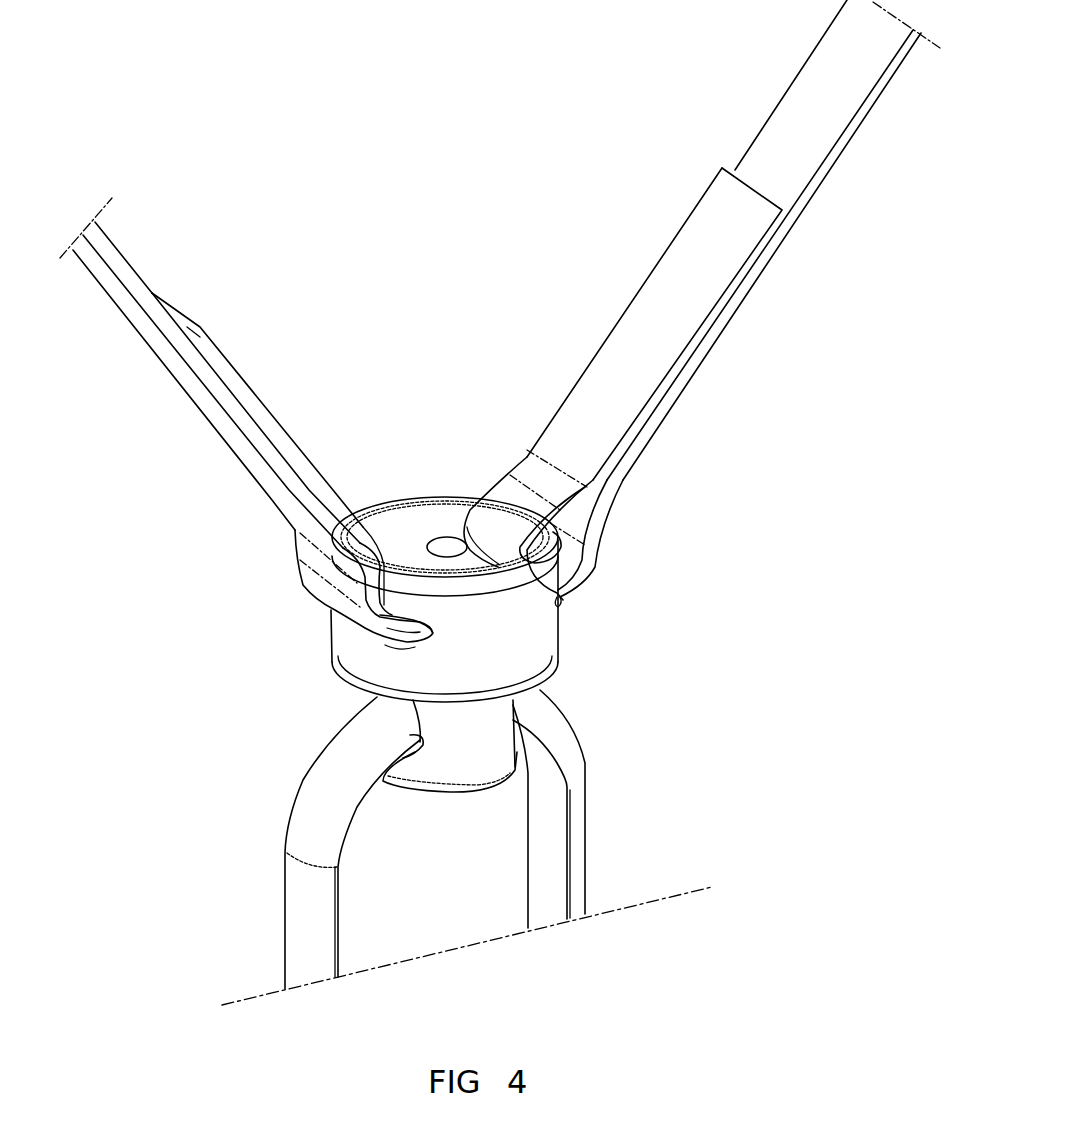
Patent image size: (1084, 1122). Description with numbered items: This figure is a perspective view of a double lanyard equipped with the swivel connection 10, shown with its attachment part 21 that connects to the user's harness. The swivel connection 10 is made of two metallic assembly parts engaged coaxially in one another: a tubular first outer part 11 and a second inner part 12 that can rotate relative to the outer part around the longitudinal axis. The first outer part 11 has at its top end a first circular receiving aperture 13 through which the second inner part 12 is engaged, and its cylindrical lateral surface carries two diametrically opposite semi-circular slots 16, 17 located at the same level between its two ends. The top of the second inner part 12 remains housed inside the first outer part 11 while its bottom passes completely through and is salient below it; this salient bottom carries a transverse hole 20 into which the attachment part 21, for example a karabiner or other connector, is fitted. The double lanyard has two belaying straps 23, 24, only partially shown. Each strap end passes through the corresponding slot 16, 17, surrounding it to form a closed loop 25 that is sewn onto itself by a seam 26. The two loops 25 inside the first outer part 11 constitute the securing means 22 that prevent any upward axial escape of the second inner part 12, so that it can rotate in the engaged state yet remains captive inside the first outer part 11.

The swivel connection 10 is at (260, 657).
The first outer part 11 is at (535, 662).
The second inner part 12 is at (486, 751).
The first circular receiving aperture 13 is at (428, 515).
The semi-circular slot 16 is at (403, 648).
The semi-circular slot 17 is at (457, 540).
The transverse hole 20 is at (413, 755).
The attachment part 21 is at (313, 905).
The securing means 22 is at (252, 583).
The belaying strap 23 is at (128, 270).
The belaying strap 24 is at (838, 97).
The closed loop 25 is at (377, 547).
The seam 26 is at (250, 418).